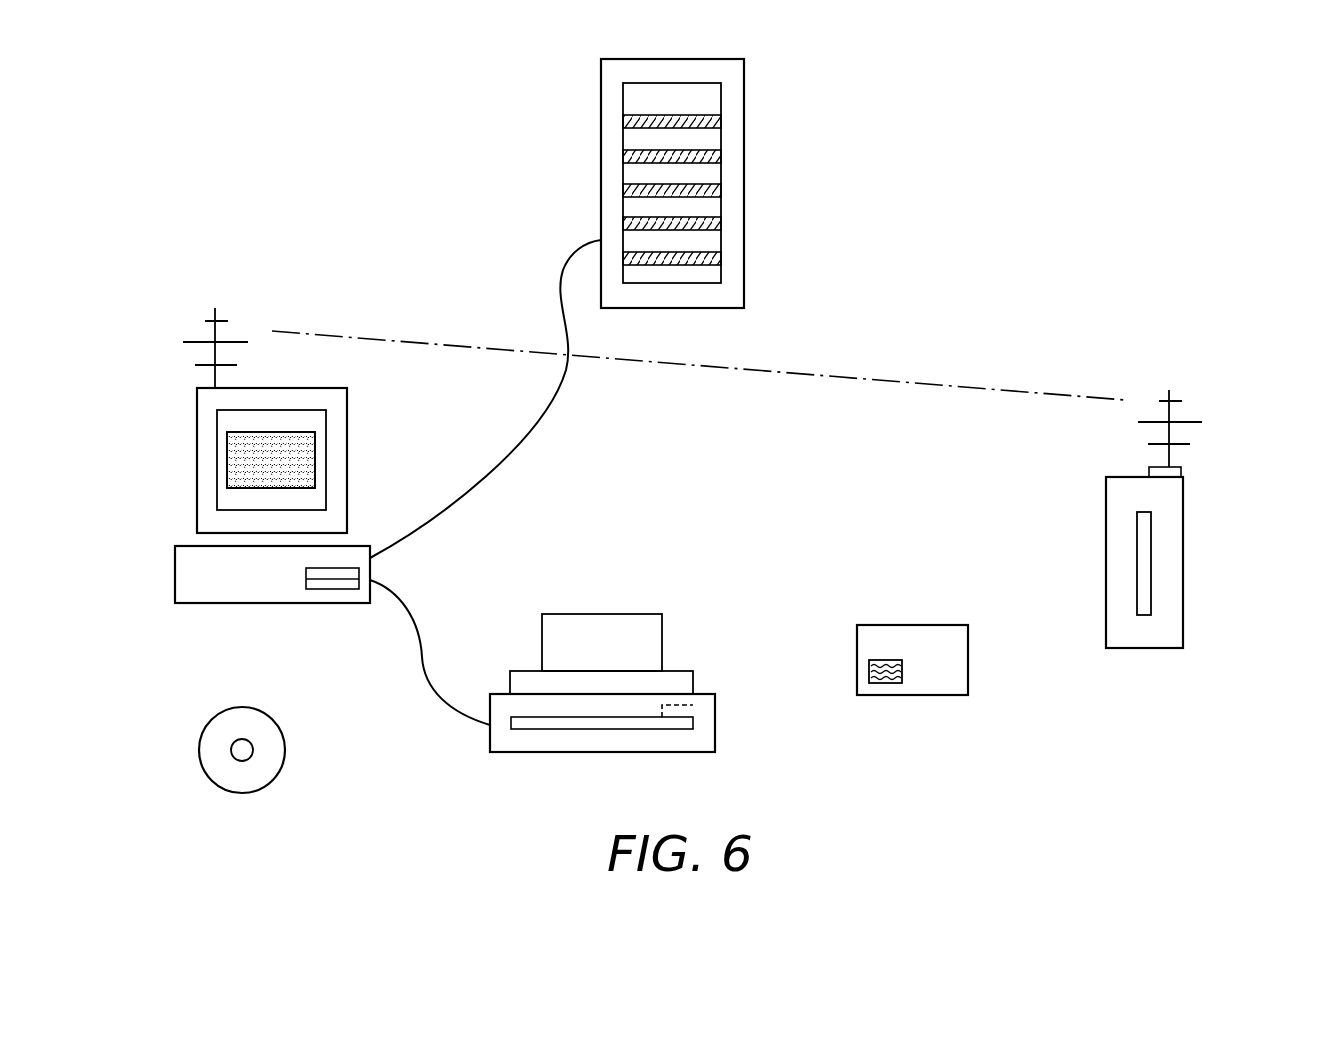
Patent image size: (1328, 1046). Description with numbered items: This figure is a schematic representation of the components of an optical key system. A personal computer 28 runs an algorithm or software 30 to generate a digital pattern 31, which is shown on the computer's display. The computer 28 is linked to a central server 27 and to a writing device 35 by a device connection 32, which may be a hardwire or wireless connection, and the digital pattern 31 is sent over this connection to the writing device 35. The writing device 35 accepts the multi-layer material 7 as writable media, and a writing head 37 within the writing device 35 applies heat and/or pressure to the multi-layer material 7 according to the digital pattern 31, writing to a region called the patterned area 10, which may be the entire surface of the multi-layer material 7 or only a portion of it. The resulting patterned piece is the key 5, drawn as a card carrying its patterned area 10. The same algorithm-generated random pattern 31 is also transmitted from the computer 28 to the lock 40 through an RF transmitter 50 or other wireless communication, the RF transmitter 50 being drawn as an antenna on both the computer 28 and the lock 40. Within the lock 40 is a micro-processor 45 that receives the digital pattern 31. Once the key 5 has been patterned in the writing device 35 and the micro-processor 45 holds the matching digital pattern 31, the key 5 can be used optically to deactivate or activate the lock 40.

The key 5 is at (944, 692).
The multi-layer material 7 is at (606, 614).
The patterned area 10 is at (882, 677).
The central server 27 is at (745, 175).
The computer 28 is at (302, 495).
The software 30 is at (292, 760).
The digital pattern 31 is at (240, 460).
The device connection 32 is at (565, 262).
The writing device 35 is at (629, 651).
The writing head 37 is at (692, 703).
The lock 40 is at (1200, 550).
The micro-processor 45 is at (1183, 472).
The RF transmitter 50 is at (210, 335).